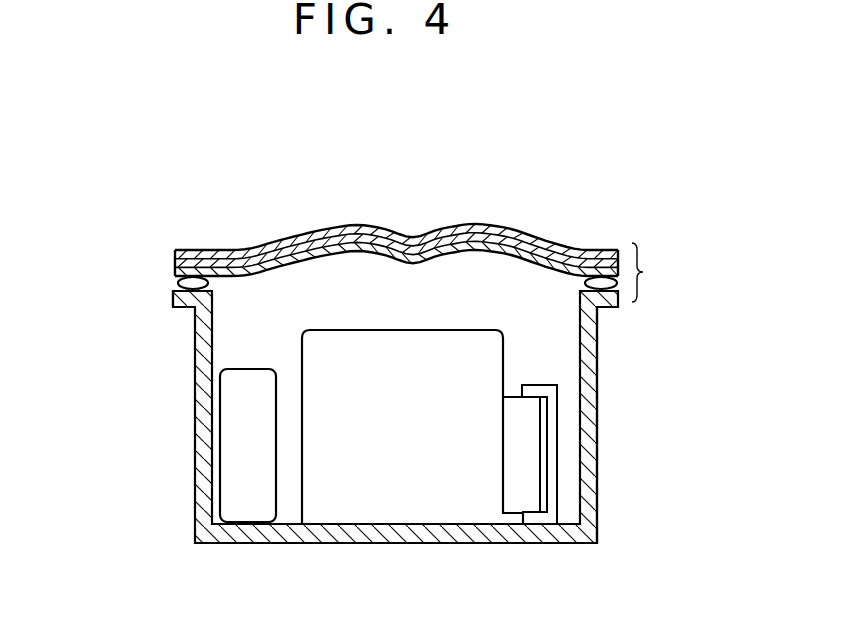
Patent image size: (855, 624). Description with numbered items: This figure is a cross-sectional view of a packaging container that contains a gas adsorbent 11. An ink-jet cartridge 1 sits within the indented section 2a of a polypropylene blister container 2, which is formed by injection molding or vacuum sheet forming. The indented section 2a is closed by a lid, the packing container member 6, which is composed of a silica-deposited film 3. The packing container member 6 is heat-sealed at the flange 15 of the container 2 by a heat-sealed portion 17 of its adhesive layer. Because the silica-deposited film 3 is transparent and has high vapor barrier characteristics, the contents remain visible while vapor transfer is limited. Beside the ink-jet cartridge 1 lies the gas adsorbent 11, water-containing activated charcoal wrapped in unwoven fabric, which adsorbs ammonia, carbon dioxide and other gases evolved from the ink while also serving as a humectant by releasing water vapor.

The ink-jet cartridge 1 is at (447, 503).
The blister container 2 is at (300, 532).
The indented section 2a is at (597, 397).
The silica-deposited film 3 is at (396, 232).
The packing container member 6 is at (648, 272).
The gas adsorbent 11 is at (218, 430).
The flange 15 is at (182, 312).
The heat-sealed portion 17 is at (177, 287).